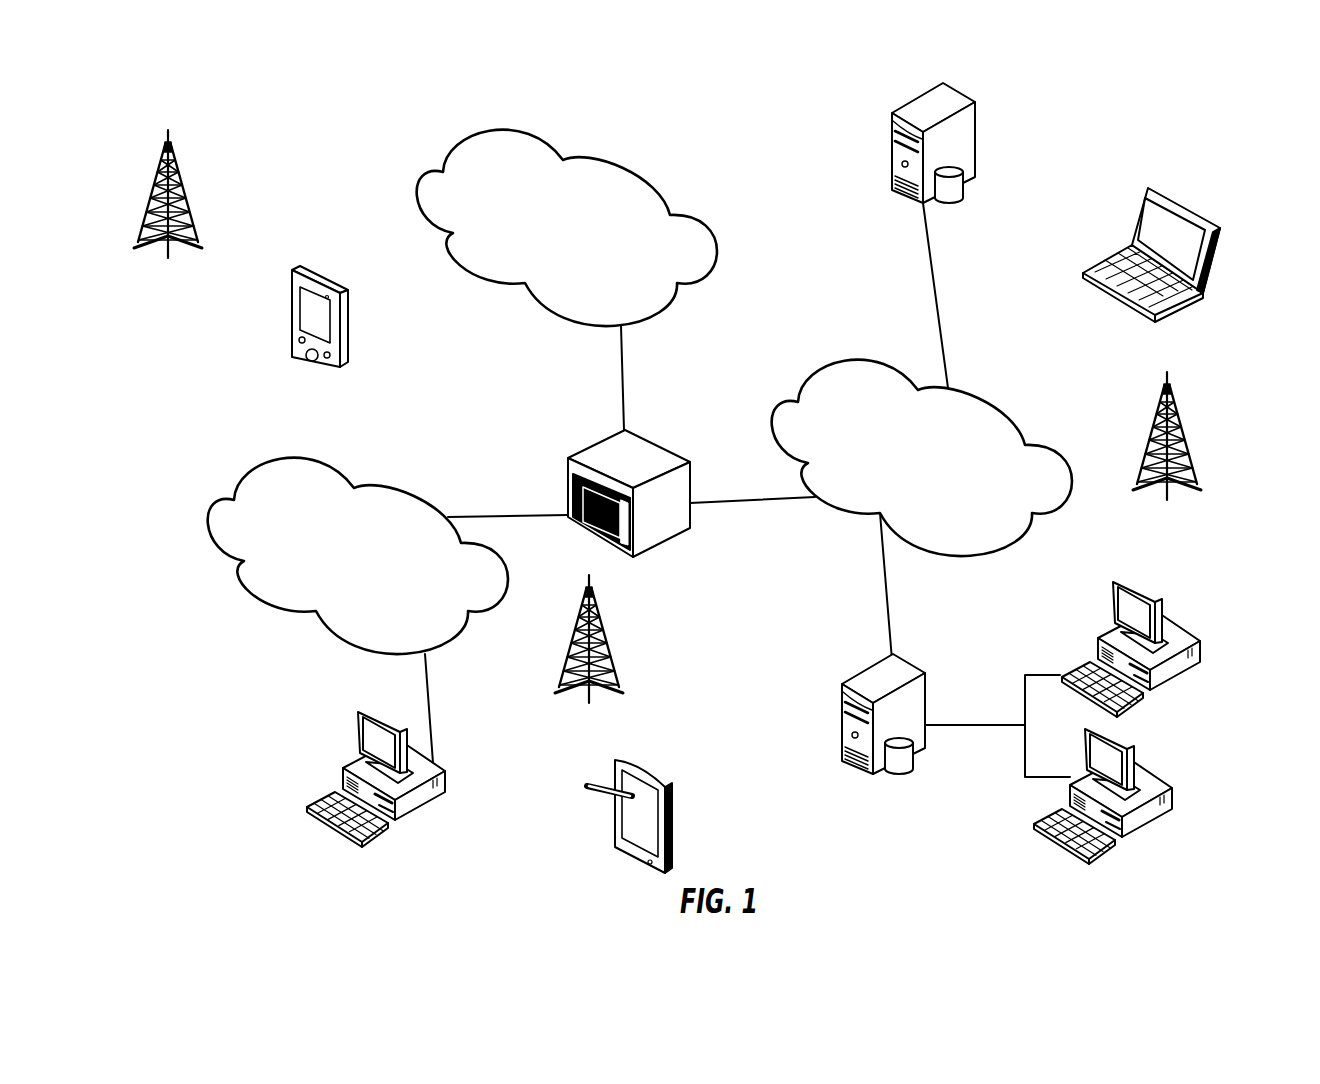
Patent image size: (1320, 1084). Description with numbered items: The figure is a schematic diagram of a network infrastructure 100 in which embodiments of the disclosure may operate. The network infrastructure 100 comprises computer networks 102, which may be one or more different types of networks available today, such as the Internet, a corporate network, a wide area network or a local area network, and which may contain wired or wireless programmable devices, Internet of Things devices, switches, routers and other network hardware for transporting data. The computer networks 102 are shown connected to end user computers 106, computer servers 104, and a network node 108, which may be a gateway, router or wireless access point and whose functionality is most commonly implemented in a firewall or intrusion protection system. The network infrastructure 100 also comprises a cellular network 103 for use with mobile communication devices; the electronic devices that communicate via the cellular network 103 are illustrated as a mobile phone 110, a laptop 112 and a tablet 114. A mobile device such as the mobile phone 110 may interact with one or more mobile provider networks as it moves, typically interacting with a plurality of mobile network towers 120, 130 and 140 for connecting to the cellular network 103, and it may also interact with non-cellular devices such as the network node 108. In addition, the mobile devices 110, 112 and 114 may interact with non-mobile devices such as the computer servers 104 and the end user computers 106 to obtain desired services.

The network infrastructure 100 is at (1068, 176).
The computer networks 102 is at (654, 507).
The cellular network 103 is at (567, 221).
The computer servers 104 is at (853, 428).
The end user computers 106 is at (784, 705).
The network node 108 is at (655, 477).
The mobile phone 110 is at (356, 298).
The laptop 112 is at (1183, 248).
The tablet 114 is at (666, 799).
The mobile network tower 120 is at (589, 655).
The mobile network tower 130 is at (1167, 451).
The mobile network tower 140 is at (168, 209).